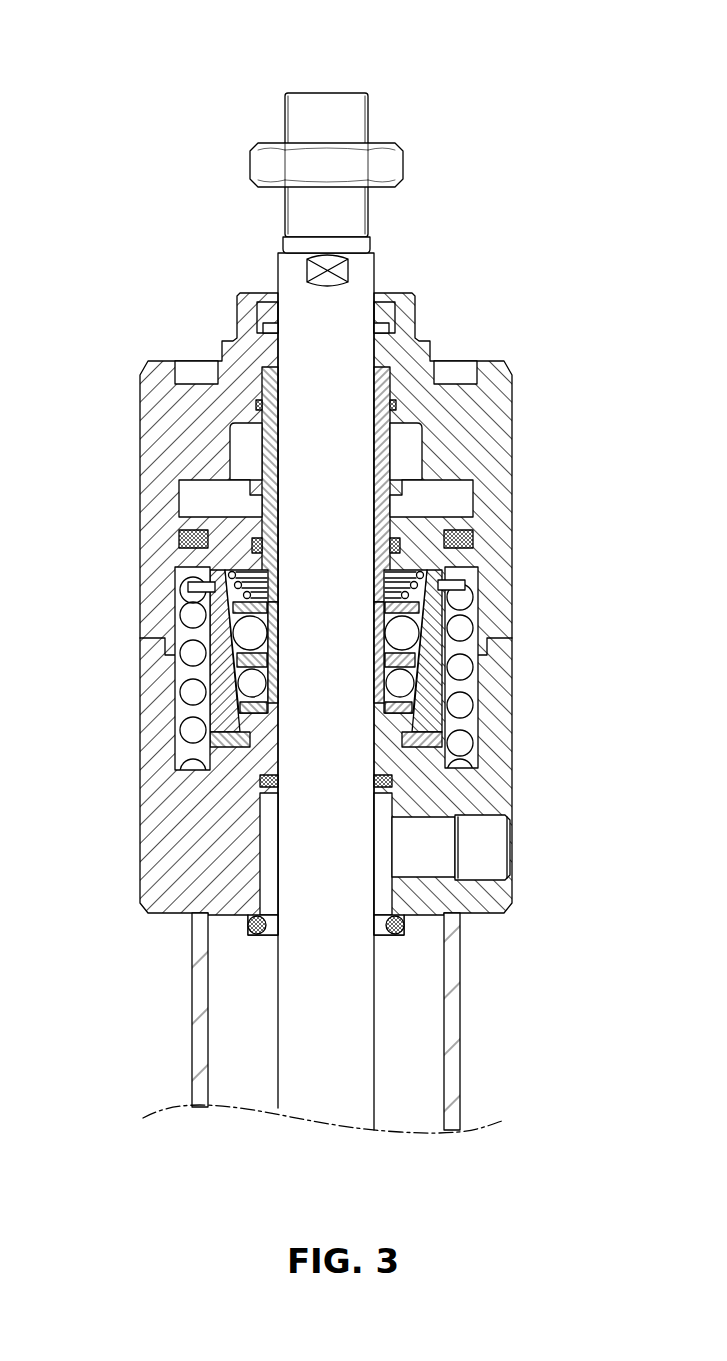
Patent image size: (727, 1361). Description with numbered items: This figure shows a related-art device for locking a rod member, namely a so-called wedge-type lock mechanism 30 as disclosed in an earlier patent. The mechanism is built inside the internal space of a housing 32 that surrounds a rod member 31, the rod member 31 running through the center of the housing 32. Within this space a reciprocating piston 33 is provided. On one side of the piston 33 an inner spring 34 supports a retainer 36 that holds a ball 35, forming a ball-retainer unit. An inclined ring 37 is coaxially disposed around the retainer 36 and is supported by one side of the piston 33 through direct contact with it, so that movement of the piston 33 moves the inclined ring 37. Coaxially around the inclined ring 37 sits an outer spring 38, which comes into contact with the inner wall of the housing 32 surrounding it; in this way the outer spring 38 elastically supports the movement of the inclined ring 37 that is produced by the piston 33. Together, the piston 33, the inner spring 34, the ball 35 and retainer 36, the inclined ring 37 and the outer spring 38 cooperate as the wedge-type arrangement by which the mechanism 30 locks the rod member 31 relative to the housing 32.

The lock mechanism 30 is at (508, 129).
The rod member 31 is at (348, 1033).
The housing 32 is at (527, 428).
The reciprocating piston 33 is at (205, 517).
The inner spring 34 is at (192, 578).
The ball 35 is at (468, 677).
The retainer 36 is at (412, 637).
The inclined ring 37 is at (433, 707).
The outer spring 38 is at (463, 746).